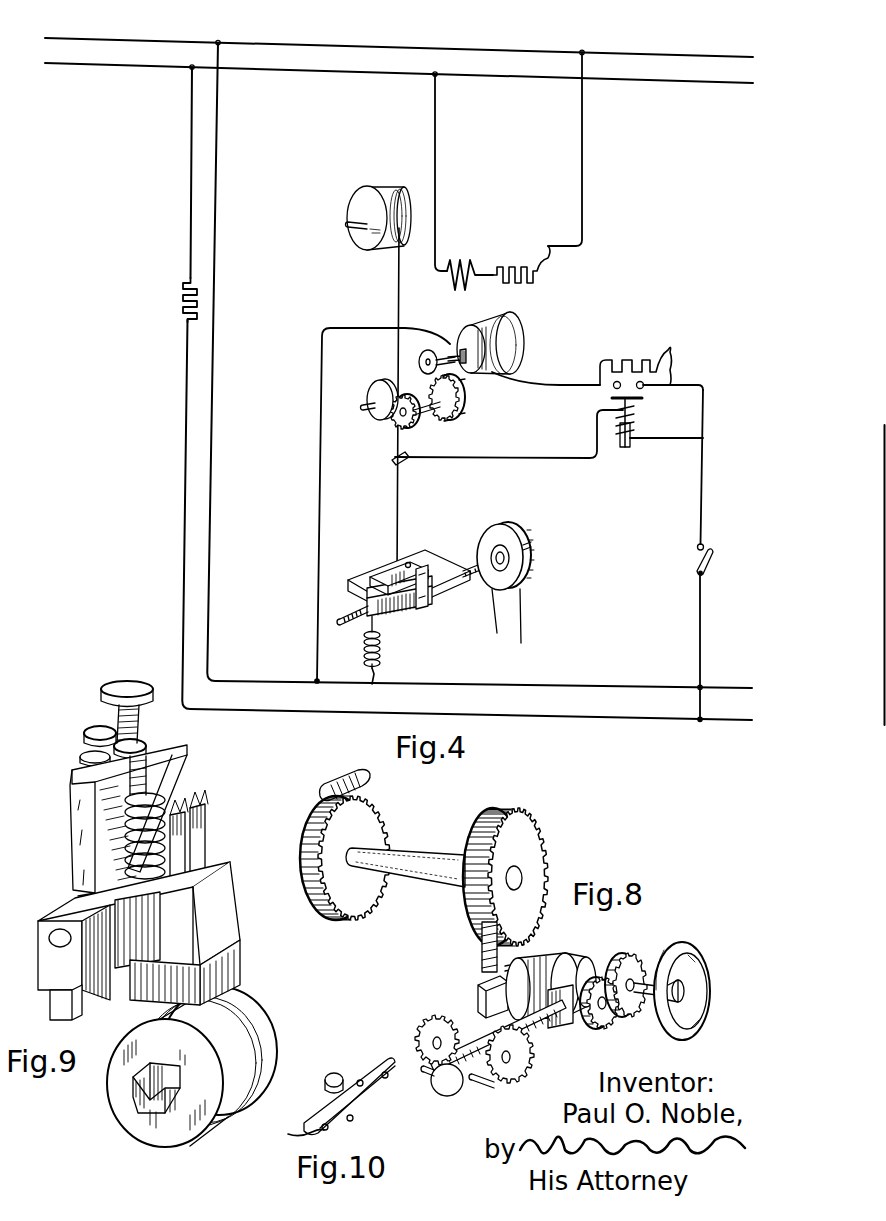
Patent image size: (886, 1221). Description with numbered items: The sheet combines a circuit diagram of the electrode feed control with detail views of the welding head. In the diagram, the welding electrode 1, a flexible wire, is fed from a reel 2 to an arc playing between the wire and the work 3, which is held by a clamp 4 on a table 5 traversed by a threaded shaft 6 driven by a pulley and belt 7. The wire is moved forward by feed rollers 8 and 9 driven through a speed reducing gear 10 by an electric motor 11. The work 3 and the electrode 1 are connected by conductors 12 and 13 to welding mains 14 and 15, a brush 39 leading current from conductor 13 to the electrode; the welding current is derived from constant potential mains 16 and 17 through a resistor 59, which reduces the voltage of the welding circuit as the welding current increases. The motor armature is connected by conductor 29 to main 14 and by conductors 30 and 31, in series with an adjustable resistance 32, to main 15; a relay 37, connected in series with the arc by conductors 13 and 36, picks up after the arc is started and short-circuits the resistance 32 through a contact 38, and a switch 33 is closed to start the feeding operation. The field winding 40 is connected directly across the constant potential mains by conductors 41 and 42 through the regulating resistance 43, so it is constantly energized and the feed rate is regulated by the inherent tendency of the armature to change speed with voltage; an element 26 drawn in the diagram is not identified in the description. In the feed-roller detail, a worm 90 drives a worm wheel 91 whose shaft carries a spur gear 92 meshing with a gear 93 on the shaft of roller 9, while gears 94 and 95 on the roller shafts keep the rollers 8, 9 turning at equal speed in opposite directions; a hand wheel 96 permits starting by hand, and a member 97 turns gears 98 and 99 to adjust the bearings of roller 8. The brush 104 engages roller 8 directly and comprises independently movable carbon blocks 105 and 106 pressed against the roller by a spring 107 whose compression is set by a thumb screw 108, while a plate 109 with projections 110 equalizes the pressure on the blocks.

In FIG. 4, the welding electrode 1 is at (400, 508).
In FIG. 4, the reel 2 is at (403, 199).
In FIG. 4, the work 3 is at (378, 572).
In FIG. 4, the clamp 4 is at (428, 606).
In FIG. 4, the table 5 is at (432, 560).
In FIG. 4, the threaded shaft 6 is at (352, 623).
In FIG. 4, the pulley and belt 7 is at (515, 530).
In FIG. 4, the feed roller 8 is at (376, 413).
In FIG. 8, the feed roller 8 is at (541, 965).
In FIG. 9, the feed roller 8 is at (262, 1016).
In FIG. 4, the feed roller 9 is at (410, 424).
In FIG. 8, the feed roller 9 is at (590, 963).
In FIG. 4, the speed reducing gear 10 is at (458, 405).
In FIG. 4, the electric motor 11 is at (522, 337).
In FIG. 4, the conductor 12 is at (376, 679).
In FIG. 4, the conductor 13 is at (528, 457).
In FIG. 4, the welding current main 14 is at (541, 688).
In FIG. 4, the welding current main 15 is at (541, 720).
In FIG. 4, the constant potential main 16 is at (534, 49).
In FIG. 4, the constant potential main 17 is at (536, 79).
In FIG. 4, the spring 26 is at (381, 649).
In FIG. 4, the conductor 29 is at (322, 395).
In FIG. 4, the conductor 30 is at (569, 385).
In FIG. 4, the conductor 31 is at (703, 530).
In FIG. 4, the adjustable resistance 32 is at (625, 359).
In FIG. 4, the switch 33 is at (708, 561).
In FIG. 4, the conductor 36 is at (686, 437).
In FIG. 4, the relay 37 is at (632, 448).
In FIG. 4, the contact 38 is at (610, 398).
In FIG. 4, the brush 39 is at (404, 462).
In FIG. 4, the field winding 40 is at (462, 262).
In FIG. 4, the conductor 41 is at (437, 156).
In FIG. 4, the conductor 42 is at (580, 139).
In FIG. 4, the adjustable resistance 43 is at (508, 266).
In FIG. 4, the resistor 59 is at (180, 300).
In FIG. 8, the worm 90 is at (338, 775).
In FIG. 8, the worm wheel 91 is at (302, 831).
In FIG. 8, the spur gear 92 is at (541, 823).
In FIG. 8, the gear 93 is at (484, 955).
In FIG. 8, the gear 94 is at (598, 1031).
In FIG. 8, the gear 95 is at (632, 1020).
In FIG. 8, the hand wheel 96 is at (703, 956).
In FIG. 8, the adjusting member 97 is at (440, 1090).
In FIG. 8, the gear 98 is at (425, 1030).
In FIG. 8, the gear 99 is at (513, 1081).
In FIG. 9, the brush 104 is at (66, 822).
In FIG. 9, the carbon brush block 105 is at (233, 965).
In FIG. 9, the carbon brush block 106 is at (233, 988).
In FIG. 9, the spring 107 is at (165, 810).
In FIG. 9, the thumb screw 108 is at (112, 686).
In FIG. 9, the pressure equalizing plate 109 is at (85, 888).
In FIG. 10, the pressure equalizing plate 109 is at (320, 1109).
In FIG. 10, the projections 110 is at (290, 1133).